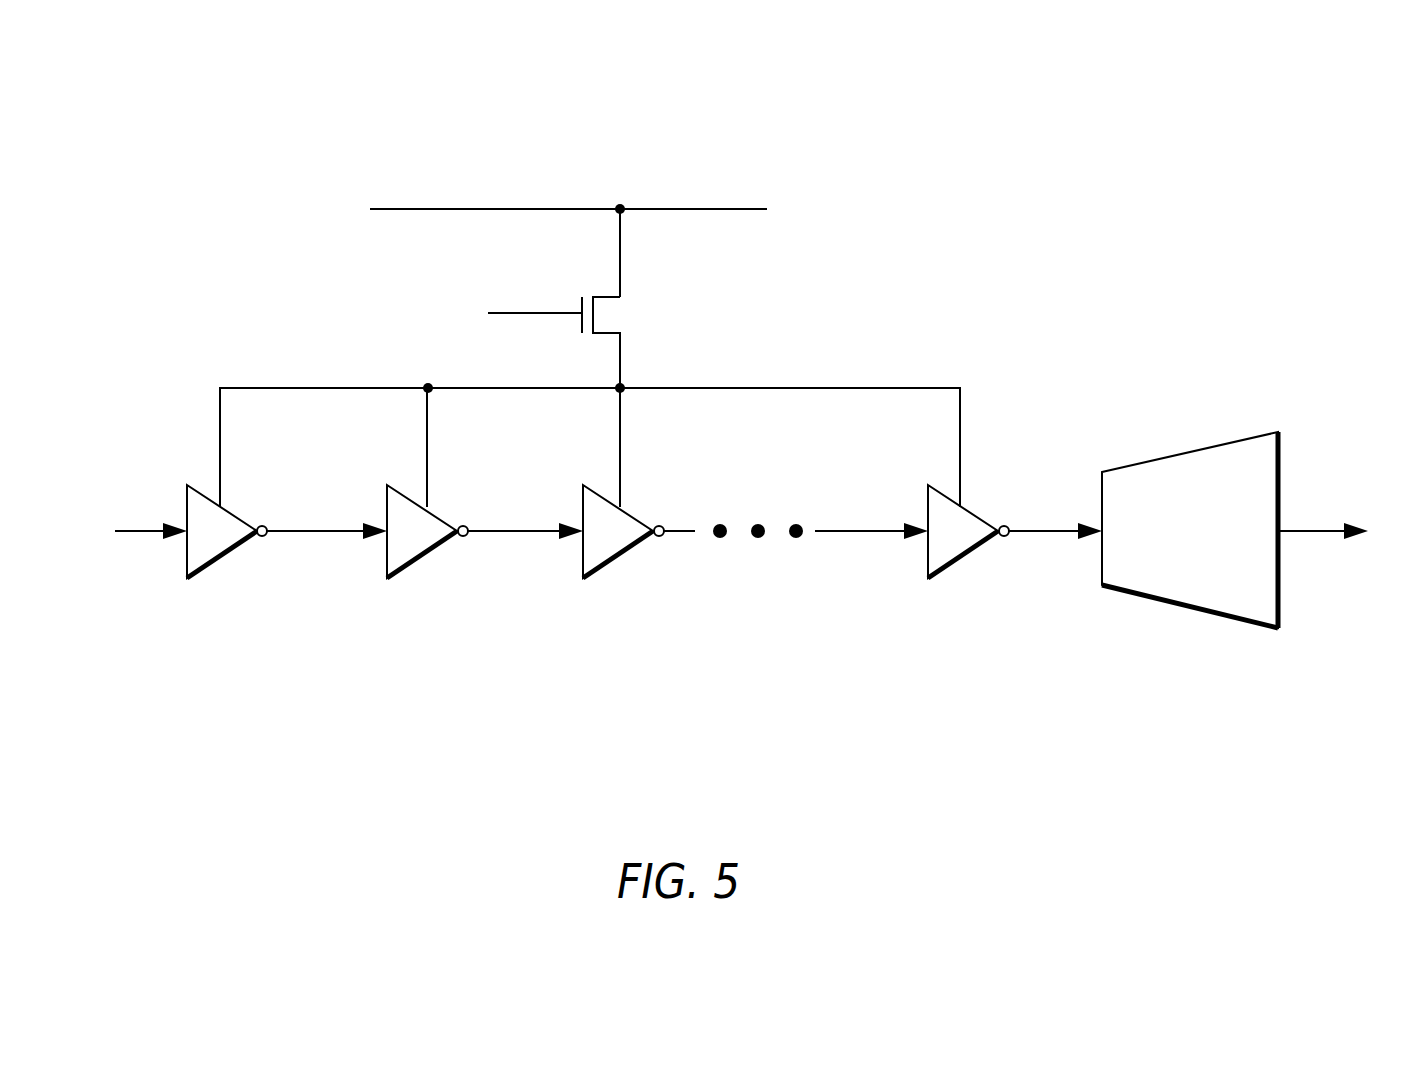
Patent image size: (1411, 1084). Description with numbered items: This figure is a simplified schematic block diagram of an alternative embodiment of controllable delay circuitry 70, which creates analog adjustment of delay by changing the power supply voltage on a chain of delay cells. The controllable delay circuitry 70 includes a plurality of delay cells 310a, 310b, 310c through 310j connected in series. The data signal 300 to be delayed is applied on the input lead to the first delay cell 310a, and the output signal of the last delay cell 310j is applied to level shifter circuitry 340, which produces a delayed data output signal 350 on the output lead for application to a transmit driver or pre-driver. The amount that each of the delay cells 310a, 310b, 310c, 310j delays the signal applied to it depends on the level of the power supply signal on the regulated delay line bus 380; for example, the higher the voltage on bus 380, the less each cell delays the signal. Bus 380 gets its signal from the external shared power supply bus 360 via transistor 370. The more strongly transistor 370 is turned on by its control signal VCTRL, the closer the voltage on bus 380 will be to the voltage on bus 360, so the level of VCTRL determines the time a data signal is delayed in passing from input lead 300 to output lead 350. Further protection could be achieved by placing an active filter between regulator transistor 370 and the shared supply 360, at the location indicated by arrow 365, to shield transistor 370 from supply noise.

The controllable delay circuitry 70 is at (147, 245).
The data signal 300 is at (137, 531).
The delay cell 310a is at (217, 570).
The delay cell 310b is at (418, 570).
The delay cell 310c is at (602, 570).
The delay cell 310j is at (968, 562).
The level shifter circuitry 340 is at (1193, 610).
The delayed data output signal 350 is at (1308, 525).
The power supply bus 360 is at (695, 209).
The arrow 365 is at (657, 260).
The transistor 370 is at (617, 297).
The bus 380 is at (803, 388).